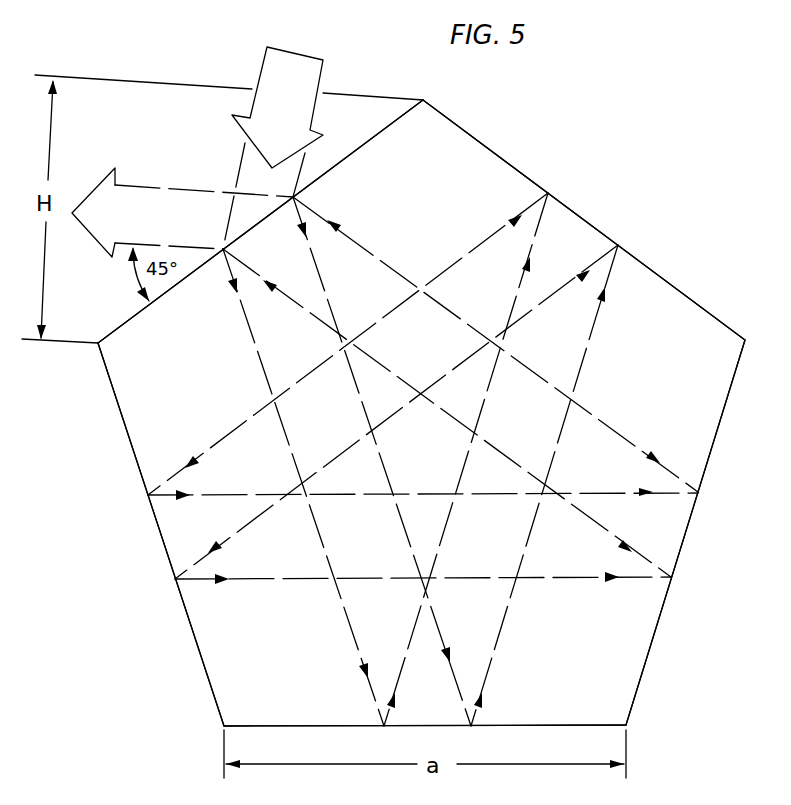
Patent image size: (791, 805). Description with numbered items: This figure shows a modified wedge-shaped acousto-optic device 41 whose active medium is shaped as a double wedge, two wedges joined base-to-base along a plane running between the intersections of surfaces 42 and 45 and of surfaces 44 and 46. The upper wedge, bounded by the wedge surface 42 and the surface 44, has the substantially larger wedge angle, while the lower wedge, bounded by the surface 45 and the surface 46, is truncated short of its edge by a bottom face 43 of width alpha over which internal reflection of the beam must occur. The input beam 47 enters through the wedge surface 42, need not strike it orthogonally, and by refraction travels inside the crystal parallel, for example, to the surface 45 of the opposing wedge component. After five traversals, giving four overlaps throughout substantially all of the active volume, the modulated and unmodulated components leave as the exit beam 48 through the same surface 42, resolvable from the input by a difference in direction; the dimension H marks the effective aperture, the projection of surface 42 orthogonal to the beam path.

The acousto-optic device 41 is at (612, 182).
The wedge surface 42 is at (368, 140).
The bottom face 43 is at (520, 727).
The surface 44 is at (600, 233).
The surface of the opposing wedge component 45 is at (164, 545).
The surface 46 is at (652, 642).
The beam 47 is at (310, 65).
The exit light 48 is at (125, 192).